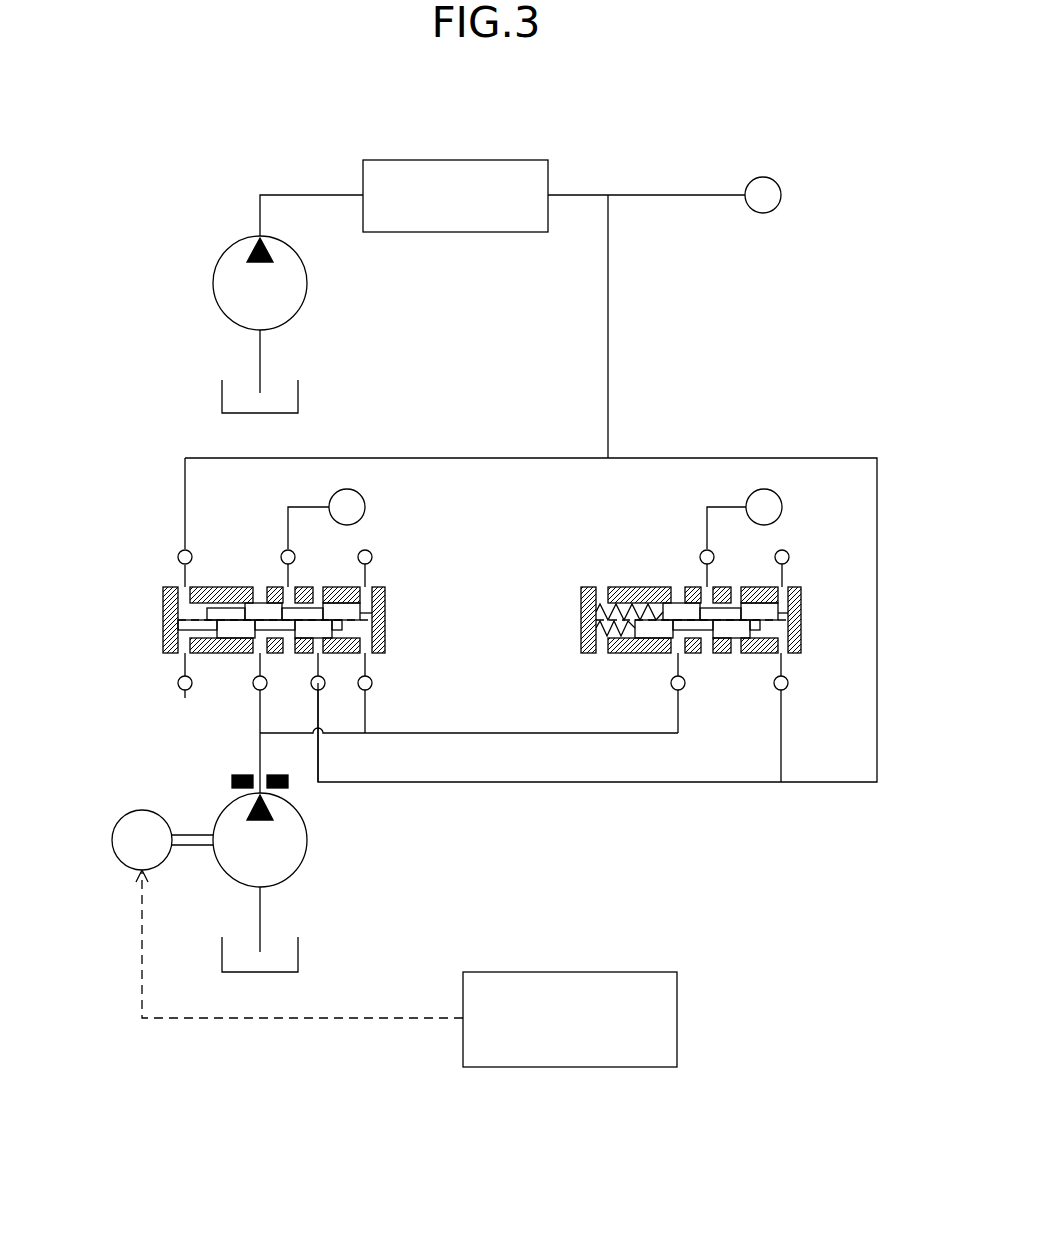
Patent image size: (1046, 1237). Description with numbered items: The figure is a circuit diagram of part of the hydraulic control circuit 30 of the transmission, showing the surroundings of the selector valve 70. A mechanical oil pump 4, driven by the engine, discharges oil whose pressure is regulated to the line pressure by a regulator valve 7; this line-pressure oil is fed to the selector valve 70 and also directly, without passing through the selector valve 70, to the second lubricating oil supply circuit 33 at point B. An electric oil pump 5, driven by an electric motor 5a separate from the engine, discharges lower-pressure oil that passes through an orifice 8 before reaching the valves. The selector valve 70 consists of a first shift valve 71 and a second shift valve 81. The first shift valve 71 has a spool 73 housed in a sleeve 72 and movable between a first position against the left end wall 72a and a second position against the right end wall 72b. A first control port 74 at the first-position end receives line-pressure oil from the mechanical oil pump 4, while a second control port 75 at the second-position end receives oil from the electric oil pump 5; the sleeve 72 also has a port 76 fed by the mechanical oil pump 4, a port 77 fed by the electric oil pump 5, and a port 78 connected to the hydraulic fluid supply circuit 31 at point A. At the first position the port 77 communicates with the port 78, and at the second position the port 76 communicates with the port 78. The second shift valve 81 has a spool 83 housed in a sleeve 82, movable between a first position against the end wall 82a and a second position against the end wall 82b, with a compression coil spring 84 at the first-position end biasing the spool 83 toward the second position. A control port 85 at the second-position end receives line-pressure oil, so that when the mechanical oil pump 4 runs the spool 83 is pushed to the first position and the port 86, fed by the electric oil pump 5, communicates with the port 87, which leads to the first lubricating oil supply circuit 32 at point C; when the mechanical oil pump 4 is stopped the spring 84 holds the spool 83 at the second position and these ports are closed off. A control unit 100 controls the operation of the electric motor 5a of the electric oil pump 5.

The mechanical oil pump 4 is at (213, 283).
The electric oil pump 5 is at (307, 847).
The electric motor 5a is at (111, 842).
The regulator valve 7 is at (437, 160).
The orifice 8 is at (230, 783).
The hydraulic control circuit 30 is at (615, 132).
The hydraulic fluid supply circuit 31 is at (305, 504).
The first lubricating oil supply circuit 32 is at (725, 504).
The second lubricating oil supply circuit 33 is at (677, 194).
The selector valve 70 is at (435, 401).
The first shift valve 71 is at (384, 580).
The sleeve 72 is at (205, 587).
The end wall 72a is at (162, 613).
The end wall 72b is at (386, 623).
The spool 73 is at (229, 628).
The first control port 74 is at (177, 557).
The second control port 75 is at (373, 686).
The port 76 is at (311, 680).
The port 77 is at (253, 688).
The port 78 is at (280, 557).
The second shift valve 81 is at (588, 580).
The sleeve 82 is at (641, 587).
The end wall 82a is at (580, 613).
The end wall 82b is at (802, 623).
The spool 83 is at (652, 628).
The compression coil spring 84 is at (603, 587).
The control port 85 is at (789, 686).
The port 86 is at (686, 686).
The port 87 is at (699, 557).
The control unit 100 is at (573, 972).